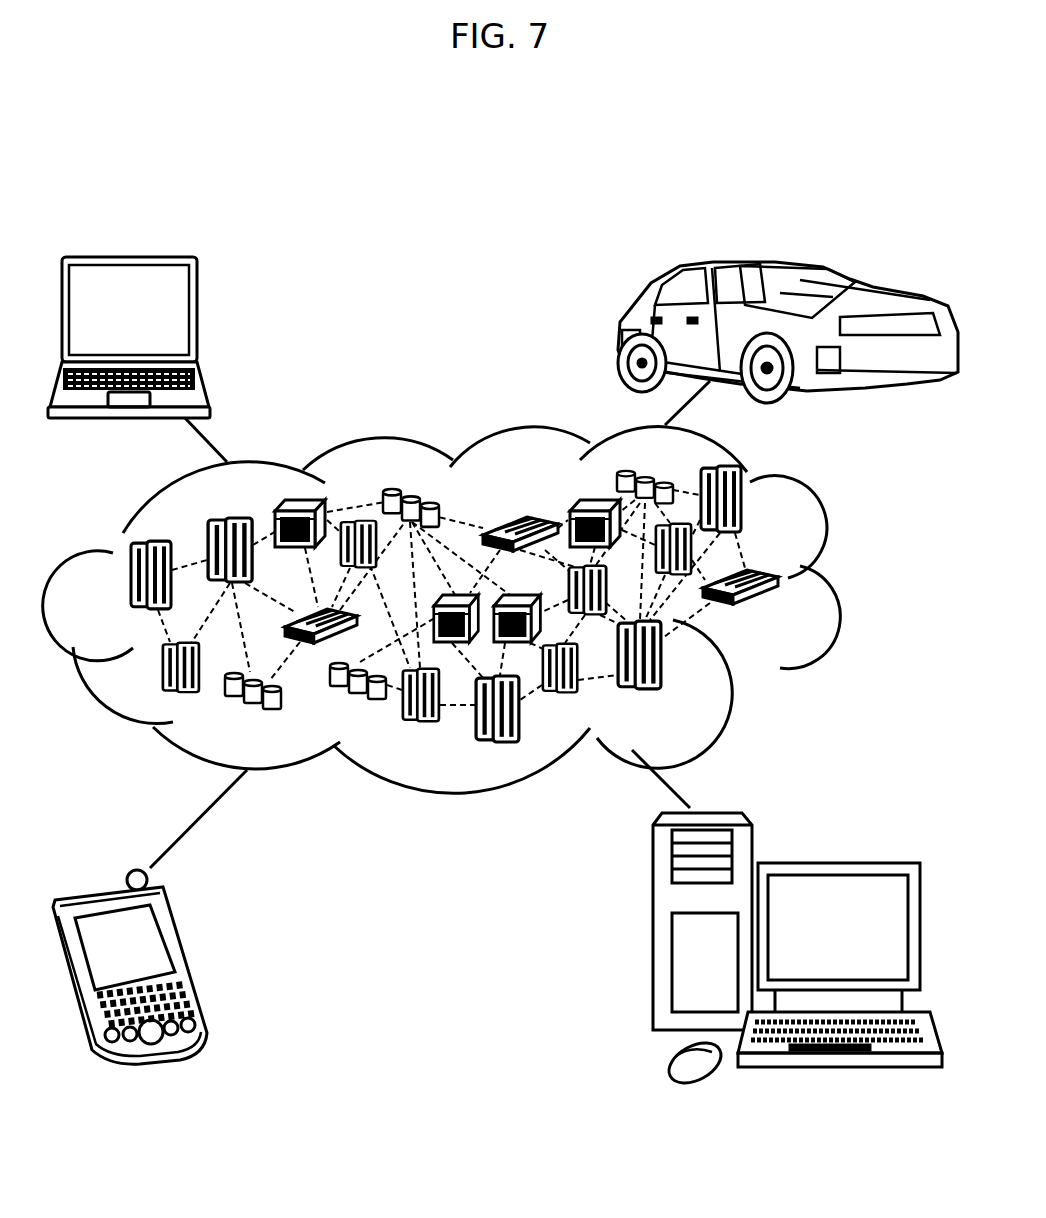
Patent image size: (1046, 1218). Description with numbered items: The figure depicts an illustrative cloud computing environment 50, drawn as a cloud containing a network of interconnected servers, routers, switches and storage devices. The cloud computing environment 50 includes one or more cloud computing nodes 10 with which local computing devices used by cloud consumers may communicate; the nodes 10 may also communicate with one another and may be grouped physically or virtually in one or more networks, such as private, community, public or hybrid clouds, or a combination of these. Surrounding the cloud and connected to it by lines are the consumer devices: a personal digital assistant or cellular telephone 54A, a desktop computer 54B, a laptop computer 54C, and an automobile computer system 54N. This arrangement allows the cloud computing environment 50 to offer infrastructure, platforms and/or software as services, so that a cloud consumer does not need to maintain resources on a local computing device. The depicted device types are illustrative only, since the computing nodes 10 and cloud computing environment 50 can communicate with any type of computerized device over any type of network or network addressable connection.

The cloud computing environment 50 is at (838, 583).
The cloud computing node 10 is at (785, 613).
The personal digital assistant (PDA) or cellular telephone 54A is at (186, 957).
The desktop computer 54B is at (836, 864).
The laptop computer 54C is at (199, 318).
The automobile computer system 54N is at (620, 331).